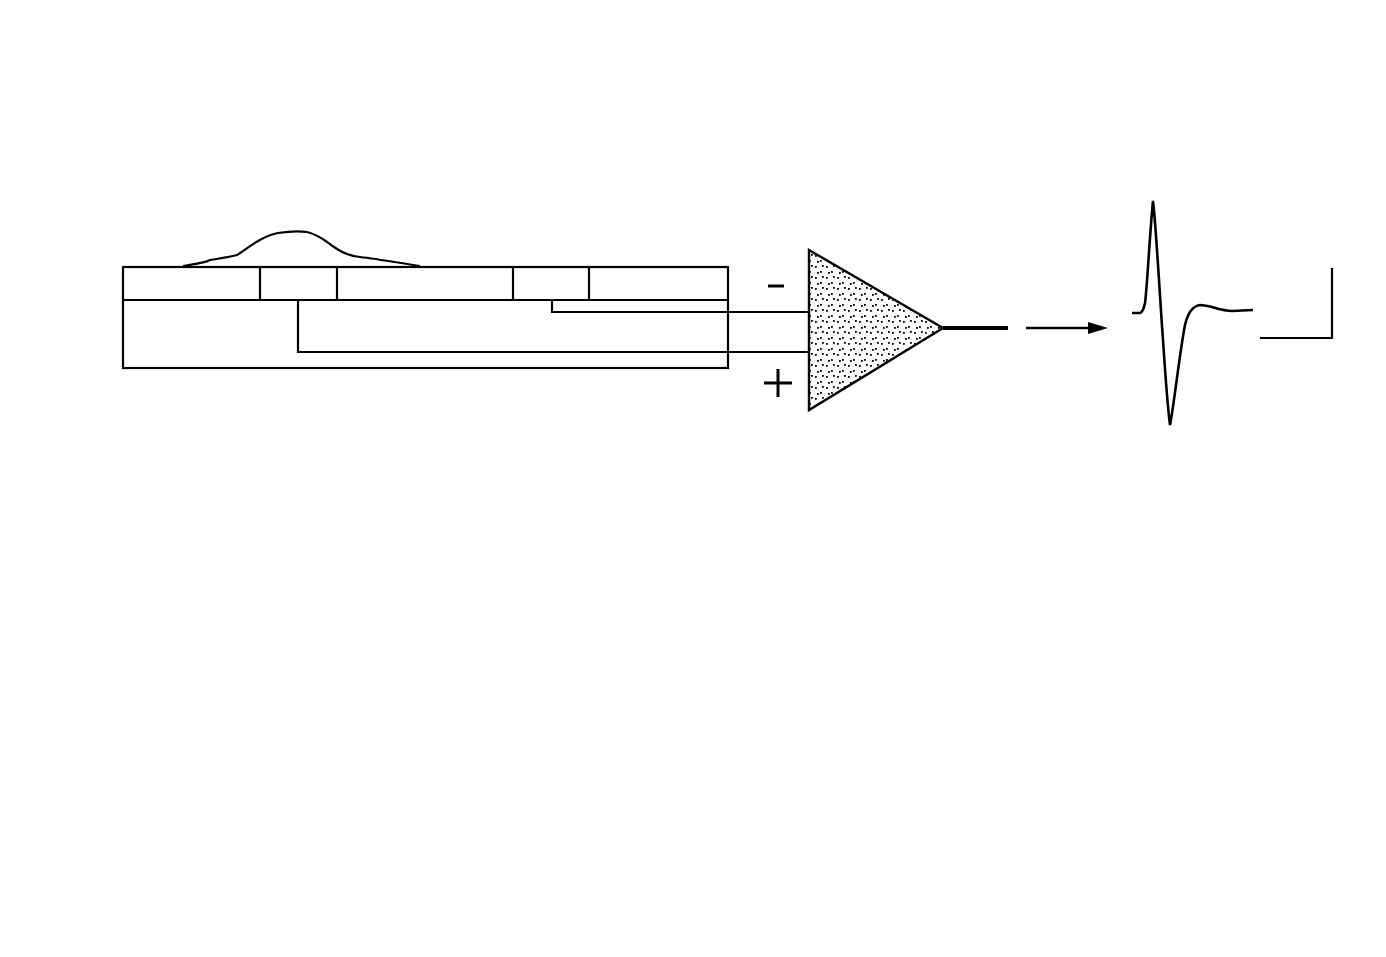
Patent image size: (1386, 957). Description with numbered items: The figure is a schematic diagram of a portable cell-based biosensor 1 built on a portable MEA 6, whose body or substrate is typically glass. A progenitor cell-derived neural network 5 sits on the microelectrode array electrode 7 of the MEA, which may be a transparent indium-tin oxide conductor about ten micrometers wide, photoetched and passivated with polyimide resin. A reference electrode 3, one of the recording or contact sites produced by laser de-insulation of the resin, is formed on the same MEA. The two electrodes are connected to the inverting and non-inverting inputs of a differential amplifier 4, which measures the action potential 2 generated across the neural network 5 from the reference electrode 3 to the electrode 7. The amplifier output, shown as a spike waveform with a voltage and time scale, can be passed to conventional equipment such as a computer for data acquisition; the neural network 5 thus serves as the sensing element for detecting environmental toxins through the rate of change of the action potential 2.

The portable cell-based biosensor 1 is at (402, 119).
The action potential 2 is at (1163, 397).
The reference electrode 3 is at (552, 280).
The differential amplifier 4 is at (875, 287).
The neural network 5 is at (290, 232).
The portable MEA 6 is at (145, 333).
The microelectrode array electrode 7 is at (275, 290).